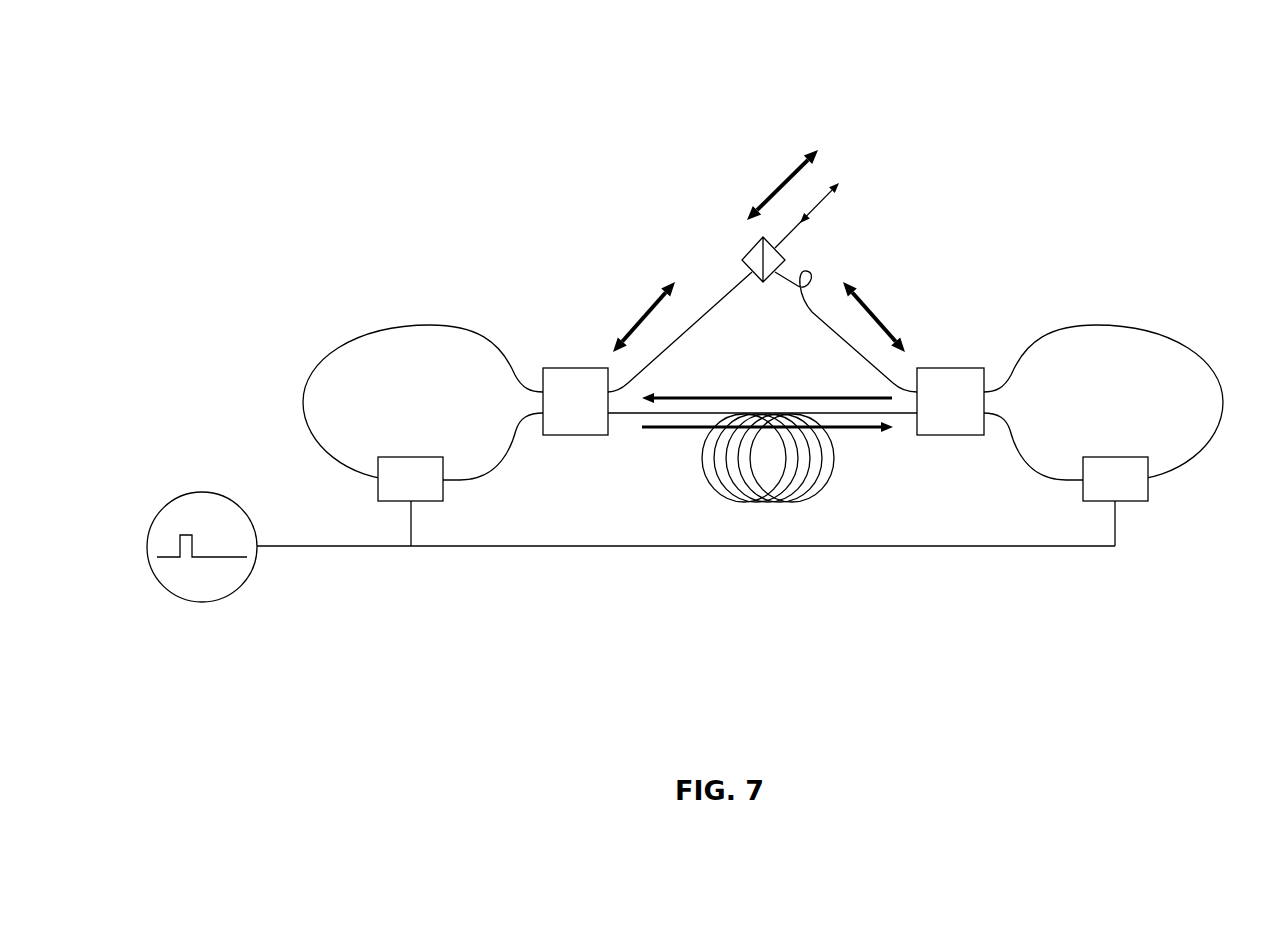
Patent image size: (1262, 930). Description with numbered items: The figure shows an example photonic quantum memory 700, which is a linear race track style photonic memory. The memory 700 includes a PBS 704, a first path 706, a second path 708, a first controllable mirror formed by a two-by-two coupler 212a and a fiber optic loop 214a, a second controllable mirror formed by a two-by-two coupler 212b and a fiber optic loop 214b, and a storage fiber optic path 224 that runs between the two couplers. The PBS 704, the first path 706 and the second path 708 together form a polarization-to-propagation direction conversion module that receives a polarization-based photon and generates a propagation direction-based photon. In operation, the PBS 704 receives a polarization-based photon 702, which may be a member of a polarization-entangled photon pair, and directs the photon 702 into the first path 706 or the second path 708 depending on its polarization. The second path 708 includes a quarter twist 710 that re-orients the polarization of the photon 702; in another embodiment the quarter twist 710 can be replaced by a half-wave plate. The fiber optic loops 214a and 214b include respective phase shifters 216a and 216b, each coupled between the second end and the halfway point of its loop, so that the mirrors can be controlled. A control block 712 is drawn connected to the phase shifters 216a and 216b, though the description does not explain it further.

The photonic quantum memory 700 is at (1253, 68).
The polarization-based photon 702 is at (817, 207).
The PBS 704 is at (760, 284).
The first path 706 is at (700, 325).
The second path 708 is at (885, 382).
The quarter twist 710 is at (797, 293).
The loop mirror controller 712 is at (243, 580).
The fiber optic loop 214a is at (1117, 325).
The fiber optic loop 214b is at (417, 325).
The 2x2 coupler 212a is at (950, 435).
The 2x2 coupler 212b is at (585, 435).
The phase shifter 216a is at (1138, 501).
The phase shifter 216b is at (443, 490).
The storage fiber optic path 224 is at (860, 413).